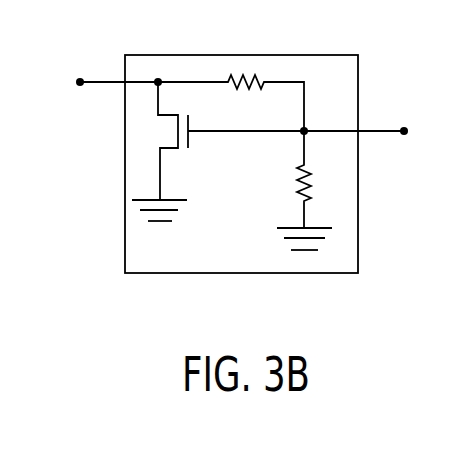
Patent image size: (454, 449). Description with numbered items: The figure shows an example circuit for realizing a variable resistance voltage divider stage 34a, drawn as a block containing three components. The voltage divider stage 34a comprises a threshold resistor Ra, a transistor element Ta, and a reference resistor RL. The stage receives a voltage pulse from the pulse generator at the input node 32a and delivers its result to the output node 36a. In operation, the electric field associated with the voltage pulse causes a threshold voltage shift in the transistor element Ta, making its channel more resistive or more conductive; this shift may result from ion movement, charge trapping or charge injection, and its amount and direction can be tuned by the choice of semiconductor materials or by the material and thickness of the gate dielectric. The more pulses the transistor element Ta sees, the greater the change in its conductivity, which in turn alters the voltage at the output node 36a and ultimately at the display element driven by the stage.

The input node 32a is at (404, 130).
The voltage divider stage 34a is at (358, 229).
The output node 36a is at (80, 81).
The threshold resistor Ra is at (231, 103).
The transistor element Ta is at (218, 151).
The reference resistor RL is at (307, 190).